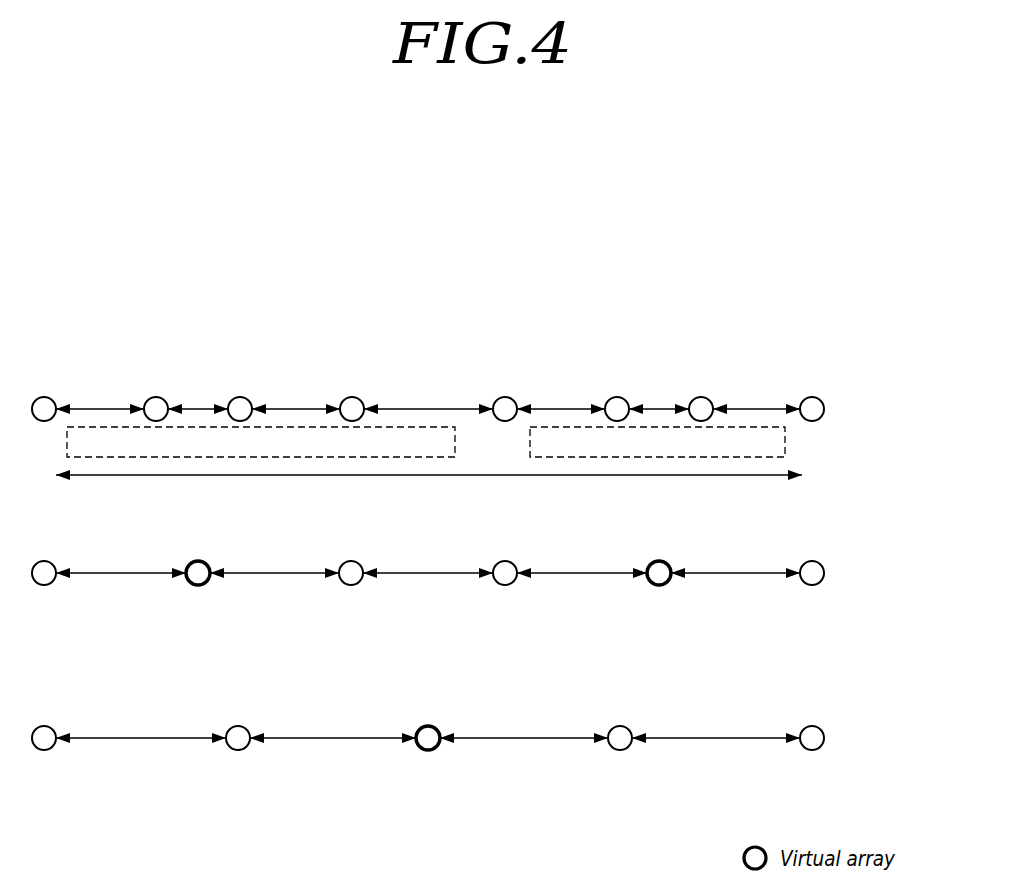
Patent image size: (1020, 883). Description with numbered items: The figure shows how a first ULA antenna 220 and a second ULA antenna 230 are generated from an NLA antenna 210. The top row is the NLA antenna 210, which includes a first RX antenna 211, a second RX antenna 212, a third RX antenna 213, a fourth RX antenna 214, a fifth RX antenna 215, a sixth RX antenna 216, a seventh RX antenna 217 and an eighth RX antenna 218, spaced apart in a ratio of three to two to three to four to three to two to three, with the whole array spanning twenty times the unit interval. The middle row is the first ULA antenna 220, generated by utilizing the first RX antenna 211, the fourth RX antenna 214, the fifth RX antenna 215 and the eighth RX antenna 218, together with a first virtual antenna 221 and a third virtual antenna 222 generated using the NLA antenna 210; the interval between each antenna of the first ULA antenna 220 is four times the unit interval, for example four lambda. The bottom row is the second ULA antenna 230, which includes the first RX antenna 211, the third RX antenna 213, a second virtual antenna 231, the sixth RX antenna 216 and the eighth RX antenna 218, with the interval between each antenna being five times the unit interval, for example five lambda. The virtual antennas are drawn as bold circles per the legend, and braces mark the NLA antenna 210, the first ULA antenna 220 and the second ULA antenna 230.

The NLA antenna 210 is at (855, 367).
The first ULA antenna 220 is at (855, 532).
The second ULA antenna 230 is at (855, 697).
The first RX antenna 211 is at (44, 396).
The second RX antenna 212 is at (156, 396).
The third RX antenna 213 is at (240, 396).
The fourth RX antenna 214 is at (352, 396).
The fifth RX antenna 215 is at (505, 396).
The sixth RX antenna 216 is at (617, 396).
The seventh RX antenna 217 is at (701, 396).
The eighth RX antenna 218 is at (812, 396).
The first virtual antenna 221 is at (198, 560).
The third virtual antenna 222 is at (659, 560).
The second virtual antenna 231 is at (428, 725).